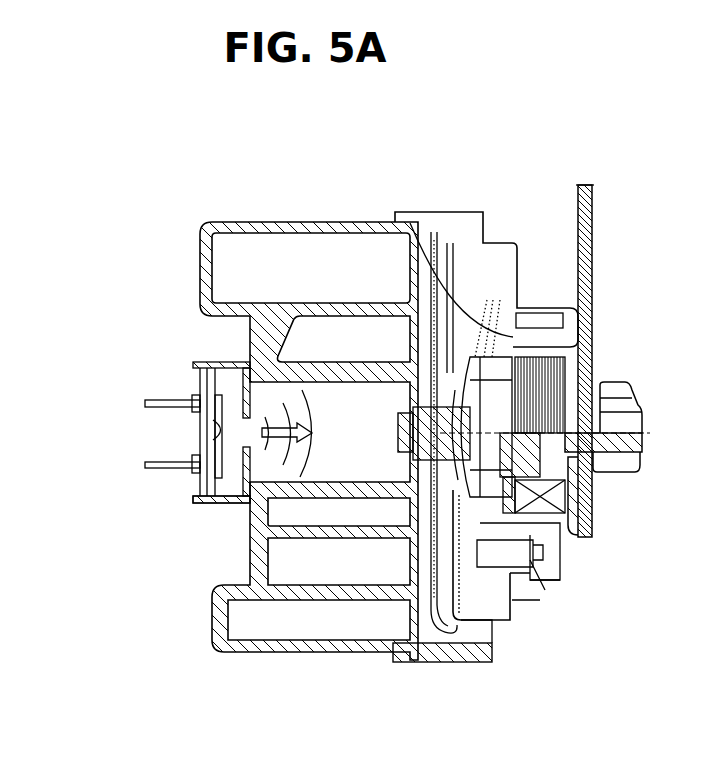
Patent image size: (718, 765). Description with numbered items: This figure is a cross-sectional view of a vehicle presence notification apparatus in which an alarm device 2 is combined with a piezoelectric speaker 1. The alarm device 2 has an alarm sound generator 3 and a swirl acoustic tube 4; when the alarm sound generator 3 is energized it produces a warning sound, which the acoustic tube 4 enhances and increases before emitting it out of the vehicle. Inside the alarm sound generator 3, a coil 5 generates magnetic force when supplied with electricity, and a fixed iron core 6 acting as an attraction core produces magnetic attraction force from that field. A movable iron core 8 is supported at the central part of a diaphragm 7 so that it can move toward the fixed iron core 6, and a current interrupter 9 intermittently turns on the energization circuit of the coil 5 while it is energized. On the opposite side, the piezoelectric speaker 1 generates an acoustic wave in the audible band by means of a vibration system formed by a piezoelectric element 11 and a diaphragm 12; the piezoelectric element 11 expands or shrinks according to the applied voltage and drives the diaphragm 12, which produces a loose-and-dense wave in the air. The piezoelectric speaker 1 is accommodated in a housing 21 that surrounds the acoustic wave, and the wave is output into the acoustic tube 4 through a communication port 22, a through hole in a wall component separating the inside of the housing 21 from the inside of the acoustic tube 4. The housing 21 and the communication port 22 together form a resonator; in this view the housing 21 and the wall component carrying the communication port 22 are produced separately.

The piezoelectric speaker 1 is at (188, 513).
The alarm device 2 is at (482, 144).
The alarm sound generator 3 is at (500, 243).
The swirl acoustic tube 4 is at (366, 222).
The coil 5 is at (557, 497).
The fixed iron core 6 is at (642, 440).
The diaphragm 7 is at (437, 600).
The movable iron core 8 is at (545, 412).
The current interrupter 9 is at (490, 413).
The piezoelectric element 11 is at (212, 432).
The diaphragm 12 is at (223, 497).
The housing 21 is at (227, 365).
The communication port 22 is at (247, 432).